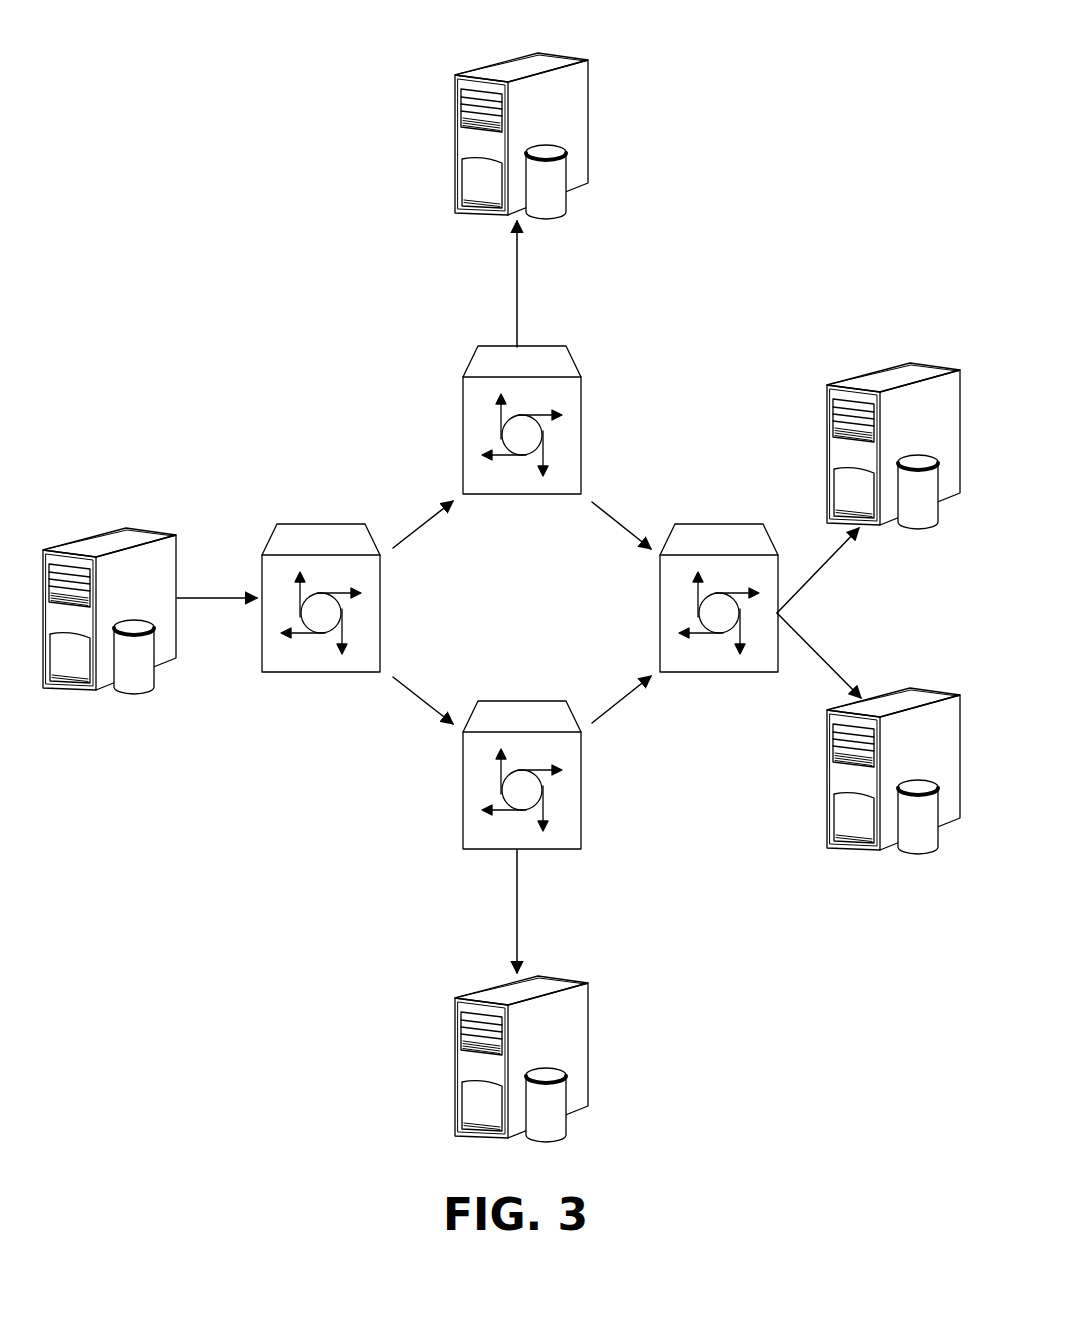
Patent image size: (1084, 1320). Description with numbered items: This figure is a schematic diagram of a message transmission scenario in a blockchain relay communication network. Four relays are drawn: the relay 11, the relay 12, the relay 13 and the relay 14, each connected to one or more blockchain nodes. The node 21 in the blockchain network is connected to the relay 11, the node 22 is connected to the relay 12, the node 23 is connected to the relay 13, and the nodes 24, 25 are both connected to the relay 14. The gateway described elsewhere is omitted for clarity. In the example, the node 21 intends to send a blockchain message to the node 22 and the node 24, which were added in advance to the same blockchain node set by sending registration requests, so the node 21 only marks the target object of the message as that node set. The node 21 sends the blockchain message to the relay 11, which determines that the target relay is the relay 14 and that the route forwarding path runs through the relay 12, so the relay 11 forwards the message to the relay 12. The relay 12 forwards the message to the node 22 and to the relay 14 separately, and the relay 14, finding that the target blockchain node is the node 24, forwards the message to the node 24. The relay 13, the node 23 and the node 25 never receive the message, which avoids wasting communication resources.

The relay 11 is at (328, 540).
The relay 12 is at (487, 363).
The relay 13 is at (527, 718).
The relay 14 is at (712, 532).
The node 21 is at (125, 547).
The node 22 is at (535, 73).
The node 23 is at (500, 995).
The node 24 is at (908, 381).
The node 25 is at (908, 706).